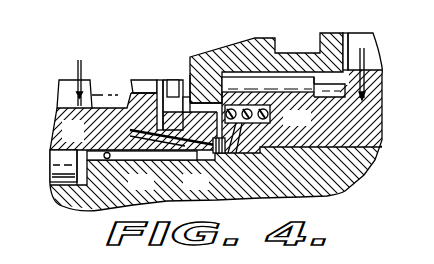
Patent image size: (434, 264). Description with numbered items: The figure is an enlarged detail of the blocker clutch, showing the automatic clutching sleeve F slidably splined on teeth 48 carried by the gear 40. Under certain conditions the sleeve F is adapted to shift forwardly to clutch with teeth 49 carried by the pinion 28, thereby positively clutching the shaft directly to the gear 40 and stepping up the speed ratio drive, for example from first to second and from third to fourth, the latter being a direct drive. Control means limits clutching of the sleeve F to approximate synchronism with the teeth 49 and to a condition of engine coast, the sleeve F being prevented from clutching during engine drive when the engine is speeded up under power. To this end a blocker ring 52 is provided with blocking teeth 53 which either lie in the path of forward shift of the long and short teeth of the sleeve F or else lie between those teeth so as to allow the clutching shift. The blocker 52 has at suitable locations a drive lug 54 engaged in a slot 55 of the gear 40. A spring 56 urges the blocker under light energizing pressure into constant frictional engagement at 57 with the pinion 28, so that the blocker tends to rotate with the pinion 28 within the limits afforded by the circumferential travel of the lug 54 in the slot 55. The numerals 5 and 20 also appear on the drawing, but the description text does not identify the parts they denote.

The body 5 is at (227, 111).
The base 20 is at (364, 175).
The pinion 28 is at (63, 81).
The gear 40 is at (360, 48).
The teeth 48 is at (266, 82).
The teeth 49 is at (143, 80).
The blocker ring 52 is at (216, 175).
The blocking teeth 53 is at (170, 88).
The drive lug 54 is at (214, 97).
The slot 55 is at (208, 100).
The spring 56 is at (300, 104).
The frictional engagement 57 is at (177, 161).
The automatic clutching sleeve F is at (252, 50).